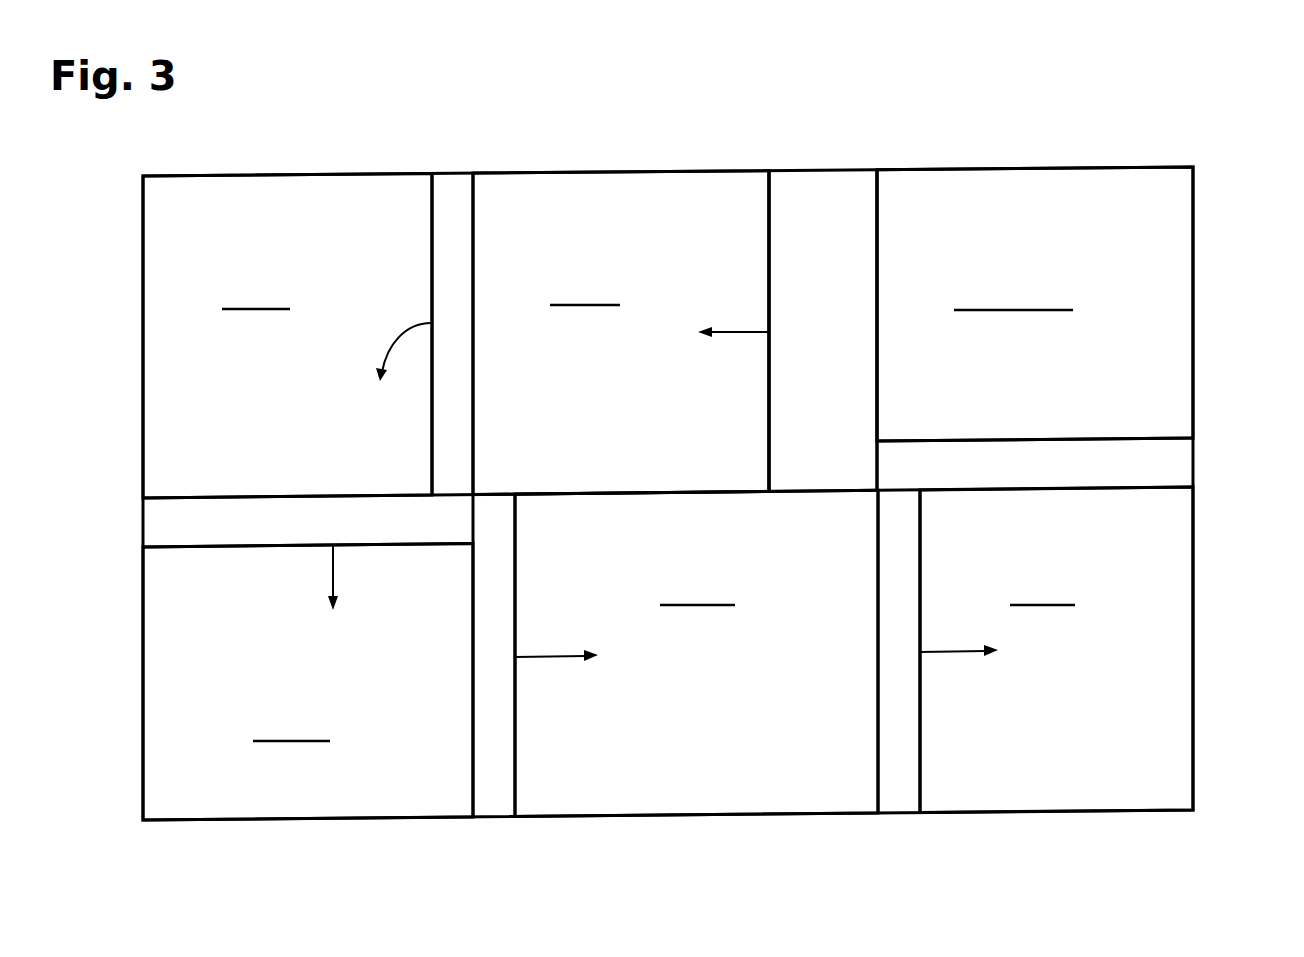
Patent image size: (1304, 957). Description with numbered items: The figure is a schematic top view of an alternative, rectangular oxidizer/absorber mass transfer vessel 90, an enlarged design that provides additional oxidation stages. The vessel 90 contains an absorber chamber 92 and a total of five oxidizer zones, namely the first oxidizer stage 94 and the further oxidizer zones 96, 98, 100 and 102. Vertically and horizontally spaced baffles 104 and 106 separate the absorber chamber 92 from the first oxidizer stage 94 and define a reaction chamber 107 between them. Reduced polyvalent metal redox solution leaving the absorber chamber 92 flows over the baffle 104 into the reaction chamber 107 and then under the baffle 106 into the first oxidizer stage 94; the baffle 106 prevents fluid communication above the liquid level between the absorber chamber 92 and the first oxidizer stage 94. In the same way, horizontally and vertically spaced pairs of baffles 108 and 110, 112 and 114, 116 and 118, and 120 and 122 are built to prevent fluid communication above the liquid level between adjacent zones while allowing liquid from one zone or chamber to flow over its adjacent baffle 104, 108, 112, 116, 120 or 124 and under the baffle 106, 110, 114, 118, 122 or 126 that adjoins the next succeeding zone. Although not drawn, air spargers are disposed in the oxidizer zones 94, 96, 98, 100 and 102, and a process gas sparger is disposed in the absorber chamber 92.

The absorber/oxidizer vessel 90 is at (1220, 347).
The absorber chamber 92 is at (1083, 182).
The first oxidizer stage 94 is at (660, 195).
The oxidizer zone 96 is at (265, 190).
The oxidizer zone 98 is at (275, 810).
The oxidizer zone 100 is at (702, 790).
The oxidizer zone 102 is at (1070, 787).
The baffle 104 is at (878, 218).
The baffle 106 is at (768, 195).
The reaction chamber 107 is at (835, 193).
The baffle 108 is at (476, 206).
The baffle 110 is at (431, 192).
The baffle 112 is at (170, 497).
The baffle 114 is at (183, 547).
The baffle 116 is at (472, 795).
The baffle 118 is at (517, 797).
The baffle 120 is at (878, 792).
The baffle 122 is at (922, 794).
The baffle 124 is at (1153, 489).
The baffle 126 is at (1162, 437).